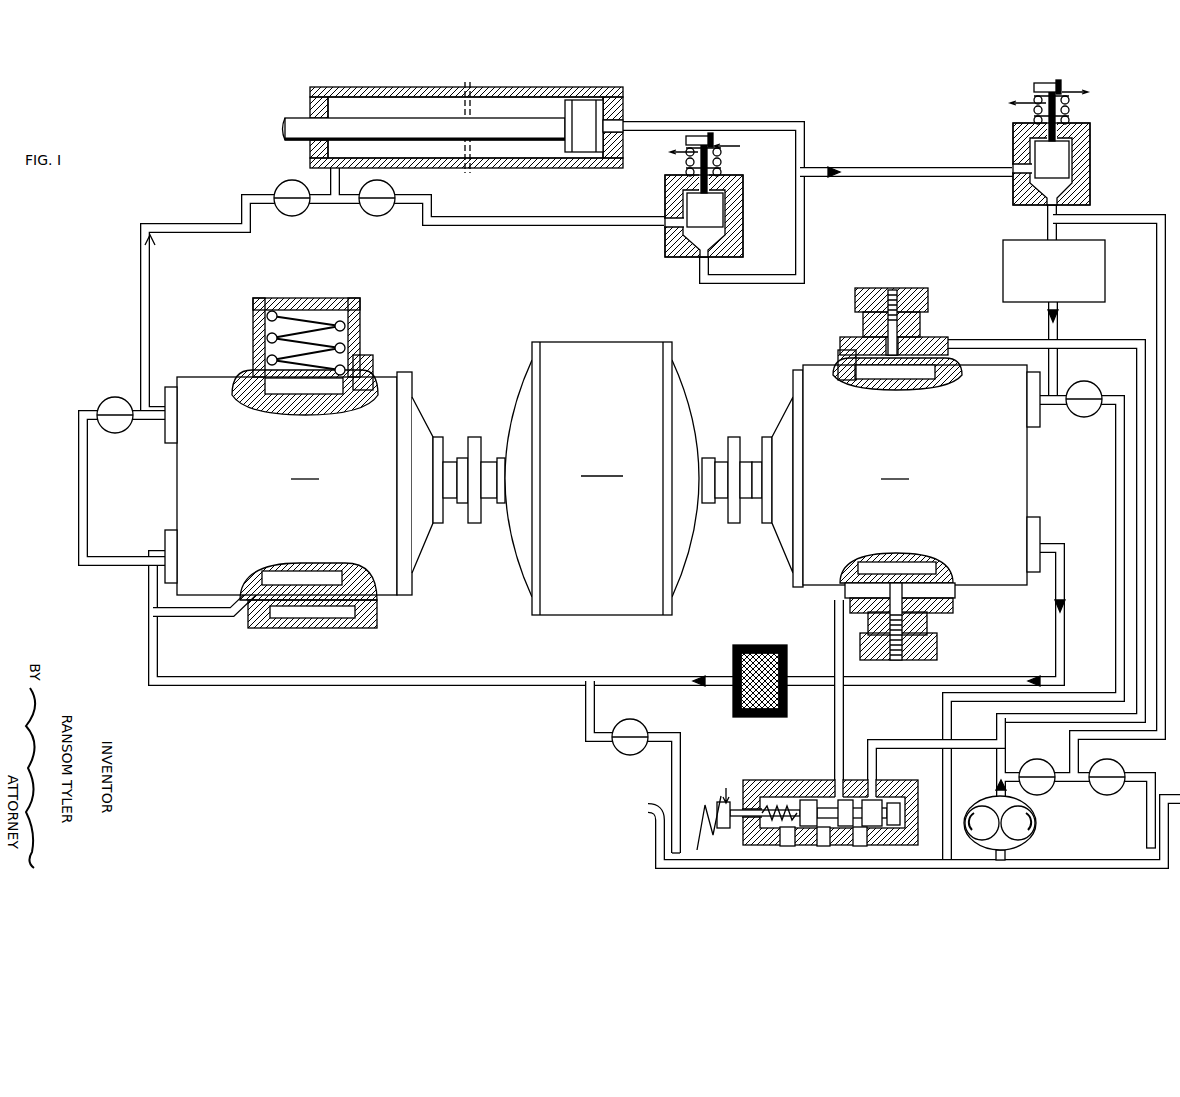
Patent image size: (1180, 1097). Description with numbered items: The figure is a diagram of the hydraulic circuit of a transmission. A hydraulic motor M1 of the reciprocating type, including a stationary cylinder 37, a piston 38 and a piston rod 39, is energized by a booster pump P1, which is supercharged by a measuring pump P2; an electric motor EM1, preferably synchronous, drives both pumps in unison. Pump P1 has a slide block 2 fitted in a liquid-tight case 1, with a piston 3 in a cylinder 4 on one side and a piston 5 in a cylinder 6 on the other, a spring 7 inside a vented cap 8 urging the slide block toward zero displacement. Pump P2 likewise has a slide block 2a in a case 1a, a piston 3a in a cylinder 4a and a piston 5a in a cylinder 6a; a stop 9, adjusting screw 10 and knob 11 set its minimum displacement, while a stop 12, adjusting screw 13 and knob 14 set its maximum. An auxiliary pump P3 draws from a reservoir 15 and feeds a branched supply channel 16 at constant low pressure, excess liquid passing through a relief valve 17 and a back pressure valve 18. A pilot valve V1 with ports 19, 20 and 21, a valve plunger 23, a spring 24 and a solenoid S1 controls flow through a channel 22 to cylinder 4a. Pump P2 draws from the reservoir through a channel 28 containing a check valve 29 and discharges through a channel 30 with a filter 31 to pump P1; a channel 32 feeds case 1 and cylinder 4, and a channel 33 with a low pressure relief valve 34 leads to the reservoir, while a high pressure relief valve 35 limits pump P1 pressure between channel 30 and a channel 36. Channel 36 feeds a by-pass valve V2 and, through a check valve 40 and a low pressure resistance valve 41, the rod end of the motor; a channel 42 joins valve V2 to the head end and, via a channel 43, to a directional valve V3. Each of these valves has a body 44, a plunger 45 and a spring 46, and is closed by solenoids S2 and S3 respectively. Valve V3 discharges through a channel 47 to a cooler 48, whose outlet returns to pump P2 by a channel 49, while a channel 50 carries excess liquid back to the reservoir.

The case 1 is at (183, 466).
The case 1a is at (1022, 470).
The slide block 2 is at (312, 408).
The slide block 2a is at (905, 386).
The piston 3 is at (344, 566).
The piston 3a is at (936, 562).
The cylinder 4 is at (360, 590).
The cylinder 4a is at (950, 592).
The piston 5 is at (342, 392).
The piston 5a is at (872, 386).
The cylinder 6 is at (372, 368).
The cylinder 6a is at (840, 356).
The spring 7 is at (260, 325).
The vented cap 8 is at (358, 315).
The stop 9 is at (928, 626).
The adjusting screw 10 is at (900, 668).
The knob 11 is at (938, 646).
The stop 12 is at (922, 338).
The adjusting screw 13 is at (894, 288).
The knob 14 is at (856, 298).
The reservoir 15 is at (650, 806).
The branched supply channel 16 is at (1034, 342).
The relief valve 17 is at (1046, 762).
The back pressure valve 18 is at (1120, 790).
The port 19 is at (876, 838).
The port 20 is at (832, 840).
The port 21 is at (822, 782).
The channel 22 is at (836, 723).
The valve plunger 23 is at (895, 790).
The spring 24 is at (770, 838).
The channel 28 is at (1050, 405).
The check valve 29 is at (1092, 386).
The channel 30 is at (470, 680).
The filter 31 is at (762, 646).
The channel 32 is at (220, 615).
The channel 33 is at (588, 716).
The low pressure relief valve 34 is at (640, 724).
The high pressure relief valve 35 is at (108, 400).
The channel 36 is at (552, 222).
The cylinder 37 is at (520, 166).
The piston 38 is at (585, 160).
The piston rod 39 is at (296, 118).
The check valve 40 is at (282, 186).
The low pressure resistance valve 41 is at (392, 188).
The channel 42 is at (790, 120).
The channel 43 is at (940, 168).
The body 44 is at (666, 250).
The plunger 45 is at (697, 217).
The spring 46 is at (722, 170).
The channel 47 is at (1047, 220).
The cooler 48 is at (1045, 289).
The channel 49 is at (1058, 335).
The channel 50 is at (1105, 222).
The hydraulic motor M1 is at (472, 134).
The booster pump P1 is at (331, 483).
The measuring pump P2 is at (923, 476).
The auxiliary pump P3 is at (1031, 846).
The electric motor EM1 is at (649, 478).
The pilot valve V1 is at (801, 809).
The by-pass valve V2 is at (656, 203).
The directional valve V3 is at (1098, 166).
The solenoid S1 is at (712, 800).
The solenoid S2 is at (725, 145).
The solenoid S3 is at (1072, 99).